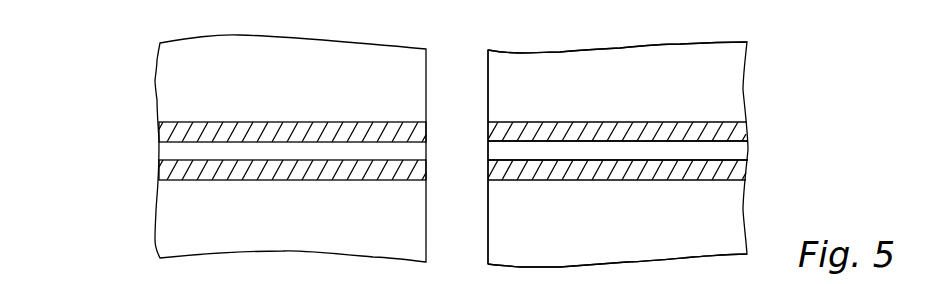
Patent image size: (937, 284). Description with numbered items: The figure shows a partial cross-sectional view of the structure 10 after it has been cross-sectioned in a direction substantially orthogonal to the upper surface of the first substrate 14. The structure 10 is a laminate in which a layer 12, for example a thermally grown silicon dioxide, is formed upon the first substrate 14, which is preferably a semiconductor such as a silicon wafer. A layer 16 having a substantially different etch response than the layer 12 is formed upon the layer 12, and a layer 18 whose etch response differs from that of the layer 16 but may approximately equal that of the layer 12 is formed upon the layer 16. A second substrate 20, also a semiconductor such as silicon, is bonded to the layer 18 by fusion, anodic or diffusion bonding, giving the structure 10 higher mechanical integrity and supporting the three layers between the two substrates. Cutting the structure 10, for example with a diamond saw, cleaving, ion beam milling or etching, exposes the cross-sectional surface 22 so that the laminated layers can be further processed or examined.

The structure 10 is at (107, 59).
The layer 12 is at (722, 167).
The first substrate 14 is at (708, 238).
The layer 16 is at (722, 148).
The layer 18 is at (723, 125).
The second substrate 20 is at (705, 100).
The cross-sectional surface 22 is at (487, 124).